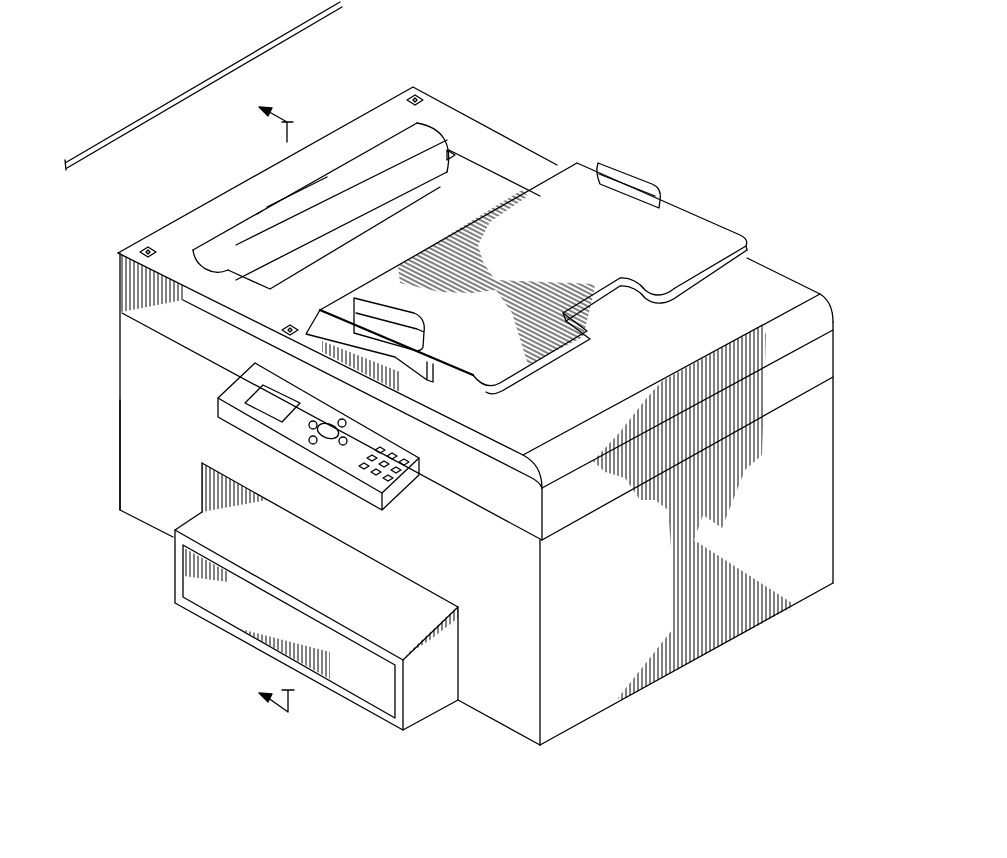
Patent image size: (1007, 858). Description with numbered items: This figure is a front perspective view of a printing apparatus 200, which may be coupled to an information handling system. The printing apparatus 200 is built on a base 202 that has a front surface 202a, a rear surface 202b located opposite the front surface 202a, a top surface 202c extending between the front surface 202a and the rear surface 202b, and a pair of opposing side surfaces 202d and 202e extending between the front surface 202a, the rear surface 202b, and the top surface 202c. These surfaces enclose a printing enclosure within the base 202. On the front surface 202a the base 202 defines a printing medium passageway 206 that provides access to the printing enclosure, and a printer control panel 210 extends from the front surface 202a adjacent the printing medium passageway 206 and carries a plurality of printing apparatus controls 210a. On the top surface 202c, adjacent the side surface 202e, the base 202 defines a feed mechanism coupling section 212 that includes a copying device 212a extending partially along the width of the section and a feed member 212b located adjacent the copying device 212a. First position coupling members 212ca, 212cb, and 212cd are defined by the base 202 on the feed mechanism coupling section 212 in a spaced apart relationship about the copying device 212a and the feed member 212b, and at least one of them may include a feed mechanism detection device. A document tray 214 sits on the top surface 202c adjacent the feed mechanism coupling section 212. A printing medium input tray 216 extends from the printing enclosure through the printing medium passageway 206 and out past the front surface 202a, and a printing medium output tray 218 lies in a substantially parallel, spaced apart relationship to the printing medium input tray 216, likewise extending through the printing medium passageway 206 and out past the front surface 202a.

The printing apparatus 200 is at (631, 103).
The base 202 is at (782, 266).
The front surface 202a is at (513, 722).
The rear surface 202b is at (833, 453).
The top surface 202c is at (667, 343).
The side surface 202d is at (583, 714).
The side surface 202e is at (120, 490).
The printing medium passageway 206 is at (200, 463).
The printer control panel 210 is at (217, 391).
The printing apparatus controls 210a is at (273, 405).
The feed mechanism coupling section 212 is at (203, 83).
The copying device 212a is at (450, 147).
The feed member 212b is at (237, 233).
The first position coupling member 212ca is at (141, 248).
The first position coupling member 212cb is at (433, 73).
The first position coupling member 212cd is at (294, 326).
The document tray 214 is at (697, 223).
The printing medium input tray 216 is at (220, 603).
The printing medium output tray 218 is at (368, 598).